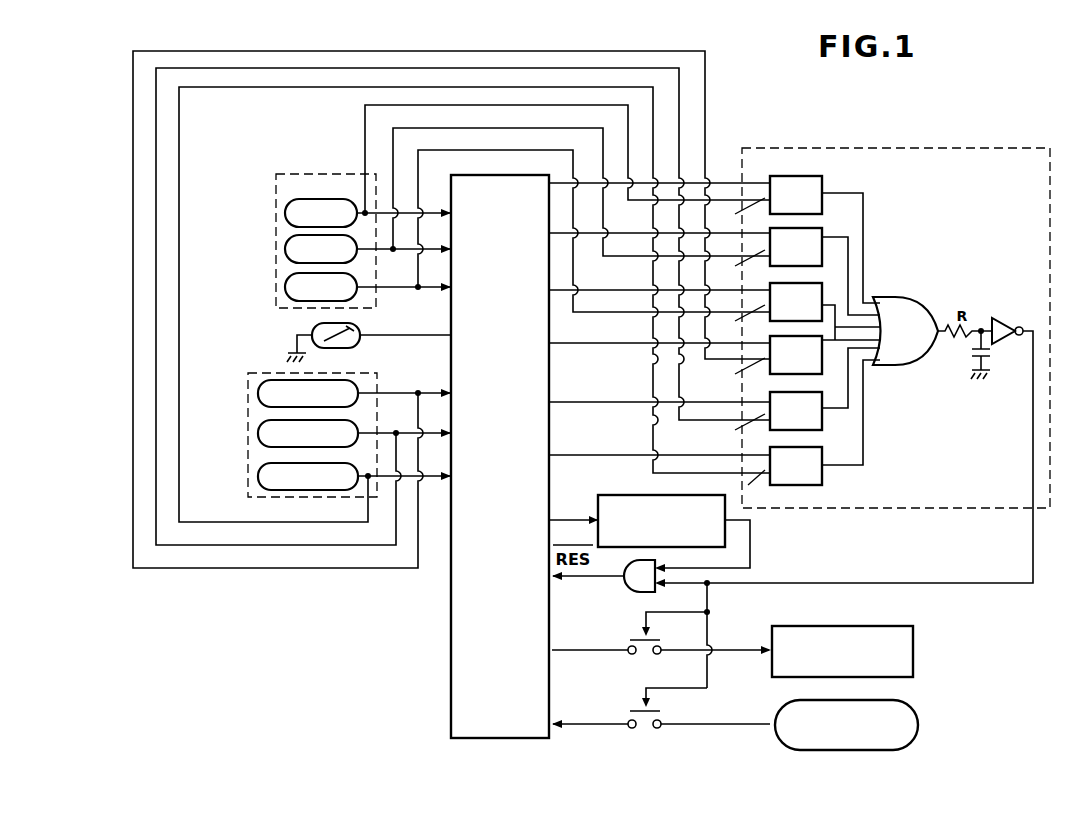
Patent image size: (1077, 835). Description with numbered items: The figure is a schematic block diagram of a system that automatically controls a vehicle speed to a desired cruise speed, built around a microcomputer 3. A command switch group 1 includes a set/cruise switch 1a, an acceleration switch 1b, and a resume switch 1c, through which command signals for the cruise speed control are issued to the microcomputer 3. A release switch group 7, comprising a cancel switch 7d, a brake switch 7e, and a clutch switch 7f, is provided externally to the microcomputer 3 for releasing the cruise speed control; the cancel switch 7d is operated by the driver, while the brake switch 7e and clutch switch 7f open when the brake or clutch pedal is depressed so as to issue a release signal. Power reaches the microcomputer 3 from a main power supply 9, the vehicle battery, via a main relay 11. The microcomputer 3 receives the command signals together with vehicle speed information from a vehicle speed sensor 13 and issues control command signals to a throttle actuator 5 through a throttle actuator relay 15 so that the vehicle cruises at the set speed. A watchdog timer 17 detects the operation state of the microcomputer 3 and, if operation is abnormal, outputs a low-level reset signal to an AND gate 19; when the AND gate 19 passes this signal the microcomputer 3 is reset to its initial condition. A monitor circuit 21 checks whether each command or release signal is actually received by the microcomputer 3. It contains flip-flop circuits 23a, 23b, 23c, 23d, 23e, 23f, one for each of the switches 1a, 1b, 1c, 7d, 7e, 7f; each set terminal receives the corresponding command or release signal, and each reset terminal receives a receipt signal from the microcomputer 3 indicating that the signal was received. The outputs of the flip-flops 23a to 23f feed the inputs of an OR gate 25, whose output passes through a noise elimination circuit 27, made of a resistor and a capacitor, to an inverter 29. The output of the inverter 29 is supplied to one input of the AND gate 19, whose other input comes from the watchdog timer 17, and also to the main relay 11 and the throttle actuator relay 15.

The command switch group 1 is at (309, 174).
The set/cruise switch 1a is at (285, 213).
The acceleration switch 1b is at (285, 249).
The resume switch 1c is at (285, 287).
The microcomputer 3 is at (451, 647).
The throttle actuator 5 is at (905, 626).
The release switch group 7 is at (355, 373).
The cancel switch 7d is at (258, 393).
The brake switch 7e is at (258, 433).
The clutch switch 7f is at (258, 476).
The main power supply 9 is at (905, 701).
The main relay 11 is at (625, 712).
The vehicle speed sensor 13 is at (372, 330).
The throttle actuator relay 15 is at (626, 642).
The watchdog timer 17 is at (638, 495).
The AND gate 19 is at (623, 584).
The monitor circuit 21 is at (963, 138).
The flip-flop circuit 23a is at (828, 184).
The flip-flop circuit 23b is at (826, 240).
The flip-flop circuit 23c is at (826, 290).
The flip-flop circuit 23d is at (822, 368).
The flip-flop circuit 23e is at (822, 418).
The flip-flop circuit 23f is at (822, 478).
The OR gate 25 is at (921, 316).
The noise elimination circuit 27 is at (968, 356).
The inverter 29 is at (997, 318).